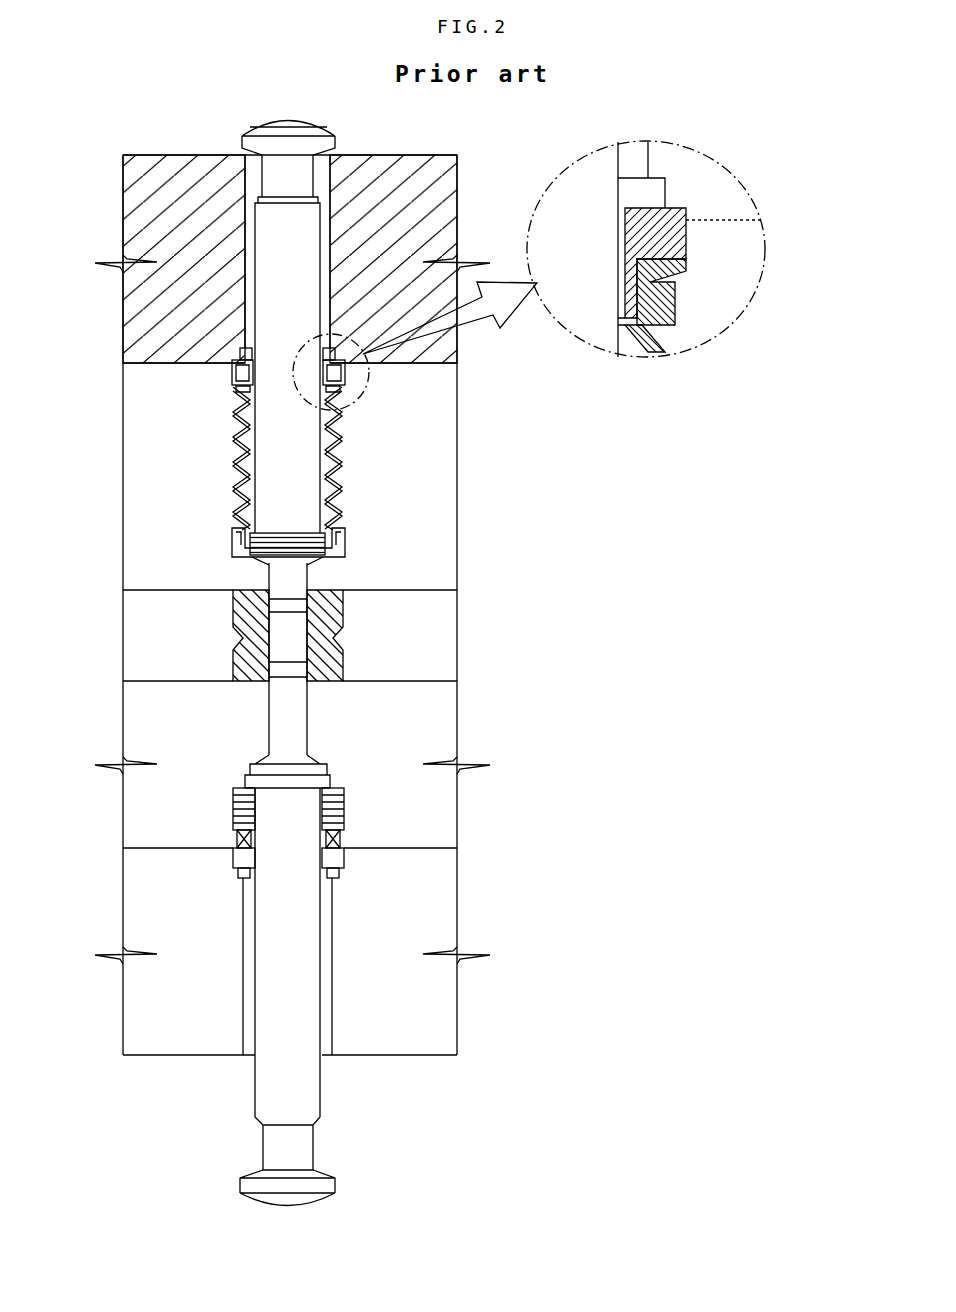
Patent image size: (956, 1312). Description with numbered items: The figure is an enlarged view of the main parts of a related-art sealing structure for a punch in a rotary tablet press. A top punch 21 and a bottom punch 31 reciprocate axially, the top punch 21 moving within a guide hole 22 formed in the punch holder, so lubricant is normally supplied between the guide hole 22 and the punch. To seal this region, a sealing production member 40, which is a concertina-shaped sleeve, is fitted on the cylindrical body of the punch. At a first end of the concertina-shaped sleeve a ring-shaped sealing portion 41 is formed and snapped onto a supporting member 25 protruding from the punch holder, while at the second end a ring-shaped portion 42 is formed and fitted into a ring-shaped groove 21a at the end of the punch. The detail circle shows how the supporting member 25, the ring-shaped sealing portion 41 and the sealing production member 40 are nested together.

The guide hole 22 is at (252, 178).
The top punch 21 is at (275, 232).
The ring-shaped groove 21a is at (292, 537).
The supporting member 25 is at (343, 373).
The ring-shaped sealing portion 41 is at (340, 390).
The sealing production member 40 is at (343, 458).
The ring-shaped portion 42 is at (343, 540).
The bottom punch 31 is at (277, 907).